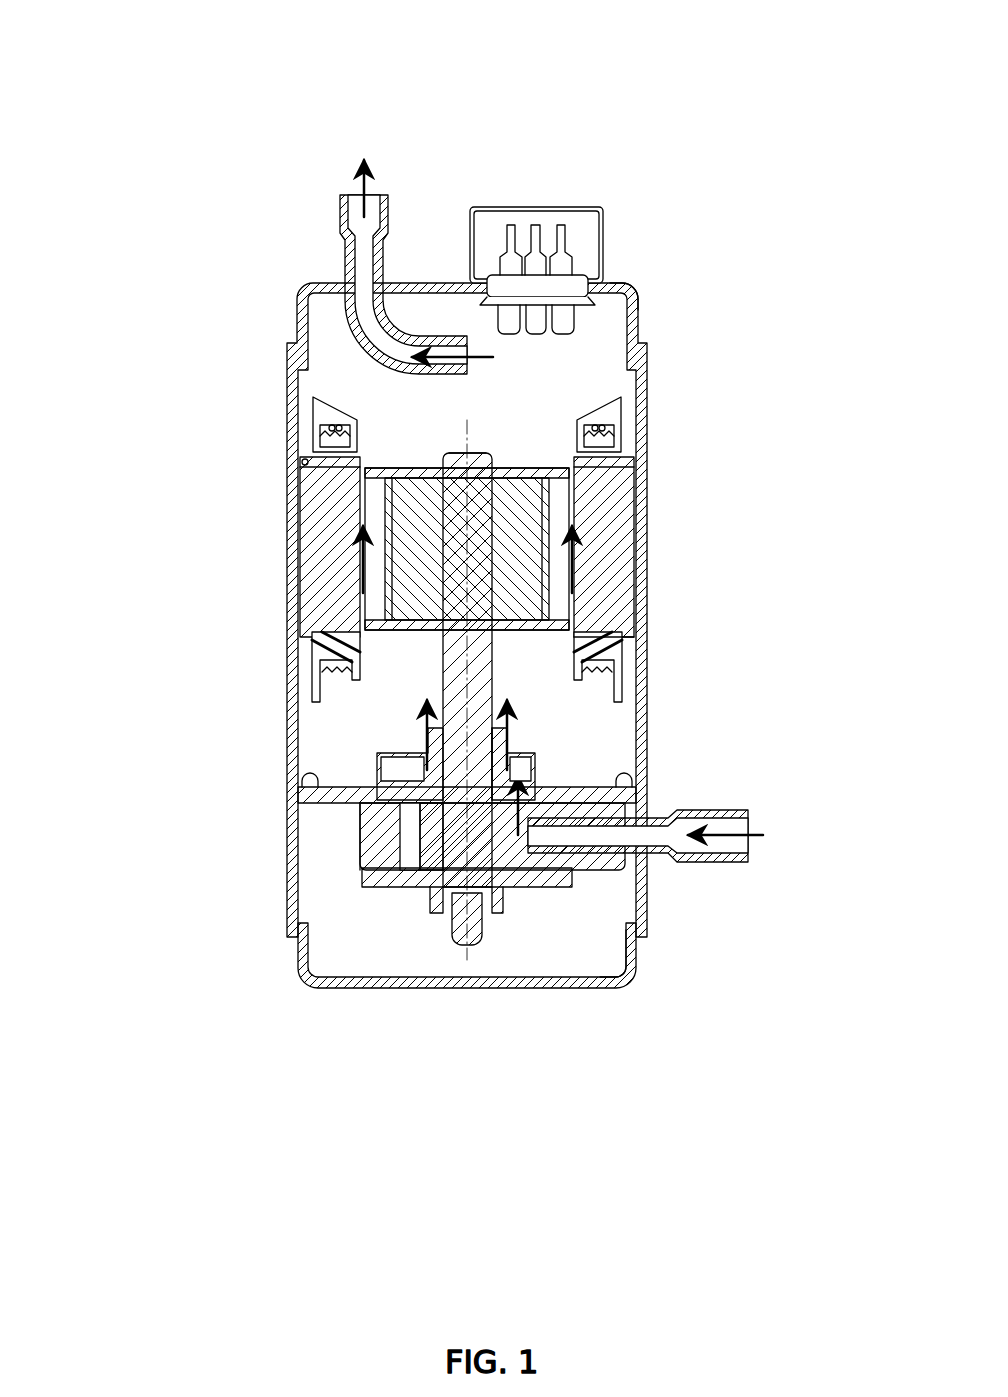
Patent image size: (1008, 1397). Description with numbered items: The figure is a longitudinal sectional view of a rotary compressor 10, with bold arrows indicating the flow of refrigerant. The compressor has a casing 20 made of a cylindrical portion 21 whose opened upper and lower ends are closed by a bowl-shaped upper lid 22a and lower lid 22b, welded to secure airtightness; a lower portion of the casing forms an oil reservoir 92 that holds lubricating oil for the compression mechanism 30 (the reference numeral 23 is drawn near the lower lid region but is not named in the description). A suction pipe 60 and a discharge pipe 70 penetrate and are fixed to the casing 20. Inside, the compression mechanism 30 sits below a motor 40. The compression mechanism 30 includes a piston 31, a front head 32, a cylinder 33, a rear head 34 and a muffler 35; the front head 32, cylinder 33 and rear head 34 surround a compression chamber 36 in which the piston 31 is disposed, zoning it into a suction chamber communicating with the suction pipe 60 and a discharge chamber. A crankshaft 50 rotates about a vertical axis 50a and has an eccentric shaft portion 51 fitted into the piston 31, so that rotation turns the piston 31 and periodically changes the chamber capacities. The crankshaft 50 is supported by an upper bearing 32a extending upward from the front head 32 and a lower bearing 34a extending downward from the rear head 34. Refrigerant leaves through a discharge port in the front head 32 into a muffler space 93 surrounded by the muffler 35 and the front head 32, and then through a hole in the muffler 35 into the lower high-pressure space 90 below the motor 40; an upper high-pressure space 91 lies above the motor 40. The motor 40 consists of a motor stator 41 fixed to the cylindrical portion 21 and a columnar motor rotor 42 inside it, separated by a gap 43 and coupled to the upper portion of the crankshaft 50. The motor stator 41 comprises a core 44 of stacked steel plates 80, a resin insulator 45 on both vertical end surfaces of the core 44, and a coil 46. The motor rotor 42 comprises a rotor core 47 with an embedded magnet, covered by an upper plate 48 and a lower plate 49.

The rotary compressor 10 is at (322, 92).
The casing 20 is at (528, 622).
The cylindrical portion 21 is at (647, 388).
The upper lid 22a is at (633, 297).
The lower lid 22b is at (638, 950).
The bottom cover 23 is at (639, 971).
The compression mechanism 30 is at (517, 907).
The piston 31 is at (408, 862).
The front head 32 is at (340, 783).
The upper bearing 32a is at (530, 765).
The cylinder 33 is at (648, 893).
The rear head 34 is at (405, 880).
The lower bearing 34a is at (503, 913).
The muffler 35 is at (560, 792).
The compression chamber 36 is at (430, 887).
The motor 40 is at (309, 437).
The motor stator 41 is at (434, 549).
The motor rotor 42 is at (303, 465).
The gap 43 is at (325, 480).
The core 44 is at (320, 565).
The stacked steel plates 80 is at (388, 547).
The insulator 45 is at (318, 650).
The coil 46 is at (318, 680).
The rotor core 47 is at (560, 512).
The upper plate 48 is at (625, 447).
The lower plate 49 is at (585, 603).
The crankshaft 50 is at (602, 681).
The axis 50a is at (470, 427).
The eccentric shaft portion 51 is at (360, 815).
The suction pipe 60 is at (693, 863).
The discharge pipe 70 is at (383, 258).
The lower high-pressure space 90 is at (378, 733).
The upper high-pressure space 91 is at (405, 412).
The oil reservoir 92 is at (590, 960).
The muffler space 93 is at (388, 766).